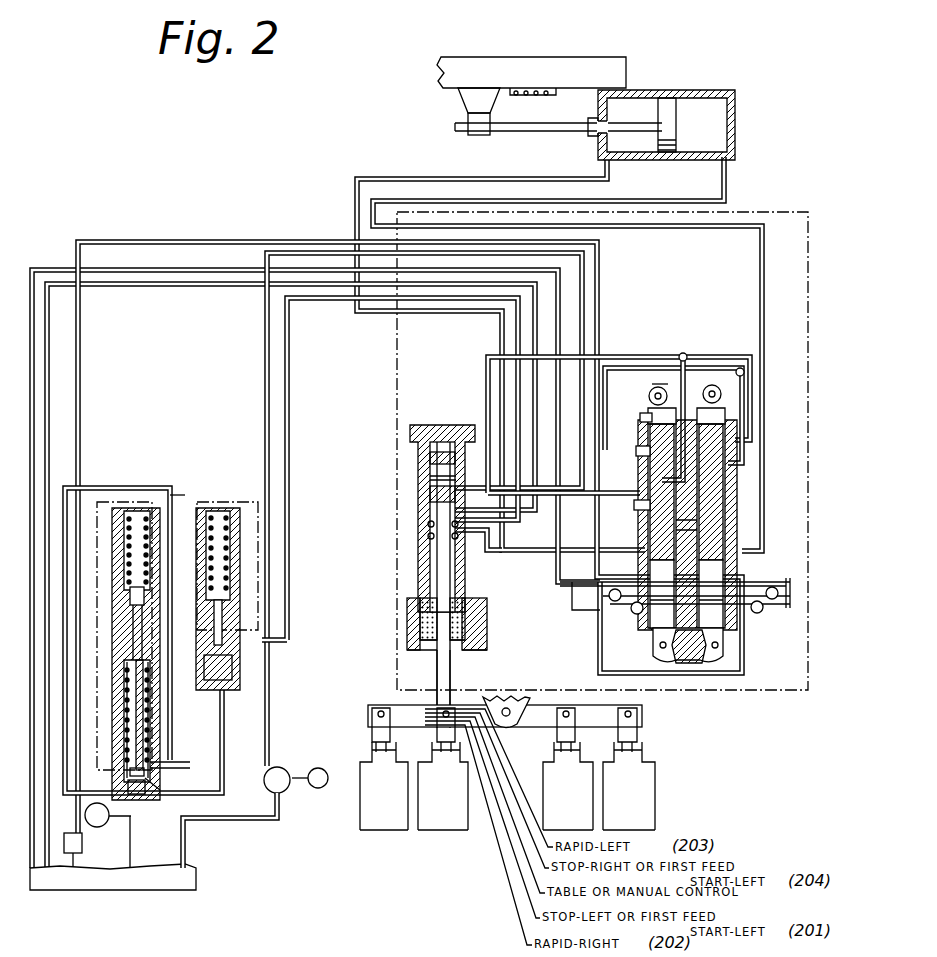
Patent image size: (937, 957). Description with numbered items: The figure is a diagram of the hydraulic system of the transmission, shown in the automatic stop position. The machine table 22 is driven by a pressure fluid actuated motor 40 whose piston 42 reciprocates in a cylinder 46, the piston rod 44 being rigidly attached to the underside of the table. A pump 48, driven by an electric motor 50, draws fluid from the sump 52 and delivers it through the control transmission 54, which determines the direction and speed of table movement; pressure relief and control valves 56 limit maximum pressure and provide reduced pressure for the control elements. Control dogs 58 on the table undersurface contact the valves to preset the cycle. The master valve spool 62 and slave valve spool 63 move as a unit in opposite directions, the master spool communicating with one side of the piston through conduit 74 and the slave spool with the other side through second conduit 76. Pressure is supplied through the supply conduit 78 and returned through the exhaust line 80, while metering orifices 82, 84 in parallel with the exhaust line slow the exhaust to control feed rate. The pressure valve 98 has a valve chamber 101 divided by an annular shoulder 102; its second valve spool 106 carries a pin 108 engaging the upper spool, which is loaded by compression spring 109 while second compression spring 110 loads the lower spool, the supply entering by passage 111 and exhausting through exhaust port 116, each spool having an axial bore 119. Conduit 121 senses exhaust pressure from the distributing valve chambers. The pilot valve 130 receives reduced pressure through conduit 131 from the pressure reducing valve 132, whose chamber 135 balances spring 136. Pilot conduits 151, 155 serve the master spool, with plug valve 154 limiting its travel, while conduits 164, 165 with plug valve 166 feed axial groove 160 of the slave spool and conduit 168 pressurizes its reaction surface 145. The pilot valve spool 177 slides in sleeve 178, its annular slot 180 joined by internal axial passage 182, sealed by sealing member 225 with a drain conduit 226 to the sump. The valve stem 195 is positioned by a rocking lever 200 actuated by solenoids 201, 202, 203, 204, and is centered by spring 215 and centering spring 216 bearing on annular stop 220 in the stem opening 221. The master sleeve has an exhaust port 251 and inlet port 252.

The machine table 22 is at (589, 68).
The pressure fluid actuated motor 40 is at (684, 99).
The piston 42 is at (677, 127).
The piston rod 44 is at (556, 131).
The cylinder 46 is at (738, 116).
The pump 48 is at (284, 769).
The electric motor 50 is at (321, 767).
The sump 52 is at (198, 877).
The control transmission 54 is at (765, 692).
The pressure relief and control valves 56 is at (224, 748).
The control dogs 58 is at (523, 90).
The master valve spool 62 is at (648, 404).
The slave valve spool 63 is at (728, 410).
The conduit 74 is at (362, 178).
The second conduit 76 is at (760, 289).
The pressure fluid supply conduit 78 is at (267, 362).
The pressure fluid exhaust line 80 is at (46, 270).
The metering orifice 82 is at (637, 614).
The metering orifice 84 is at (615, 602).
The pressure valve 98 is at (106, 692).
The cylindrical valve chamber 101 is at (128, 600).
The annular shoulder 102 is at (136, 672).
The second valve spool 106 is at (160, 774).
The pin 108 is at (131, 752).
The compression spring 109 is at (127, 522).
The second compression spring 110 is at (125, 712).
The passage 111 is at (178, 495).
The exhaust port 116 is at (152, 762).
The axial bore 119 is at (128, 786).
The conduit 121 is at (93, 394).
The pilot valve 130 is at (440, 576).
The conduit 131 is at (293, 372).
The pressure reducing valve 132 is at (213, 490).
The chamber 135 is at (212, 680).
The spring 136 is at (230, 516).
The spool reaction surface 145 is at (733, 530).
The conduit 151 is at (672, 381).
The plug valve 154 is at (683, 354).
The pilot conduit 155 is at (604, 516).
The axial groove 160 is at (96, 494).
The conduit 164 is at (606, 362).
The conduit 165 is at (746, 444).
The plug valve 166 is at (745, 371).
The conduit 168 is at (658, 355).
The pilot valve spool 177 is at (430, 468).
The sleeve 178 is at (430, 454).
The annular slot 180 is at (430, 480).
The internal axial passage 182 is at (430, 496).
The valve stem 195 is at (448, 678).
The rocking lever 200 is at (532, 722).
The solenoid 201 is at (396, 805).
The solenoid 202 is at (458, 805).
The solenoid 203 is at (580, 805).
The solenoid 204 is at (643, 805).
The spring 215 is at (470, 622).
The centering spring 216 is at (418, 626).
The annular stop 220 is at (470, 640).
The stem opening 221 is at (425, 650).
The sealing member 225 is at (430, 586).
The drain conduit 226 is at (489, 549).
The pressure fluid exhaust port 251 is at (640, 450).
The pressure fluid inlet port 252 is at (642, 417).